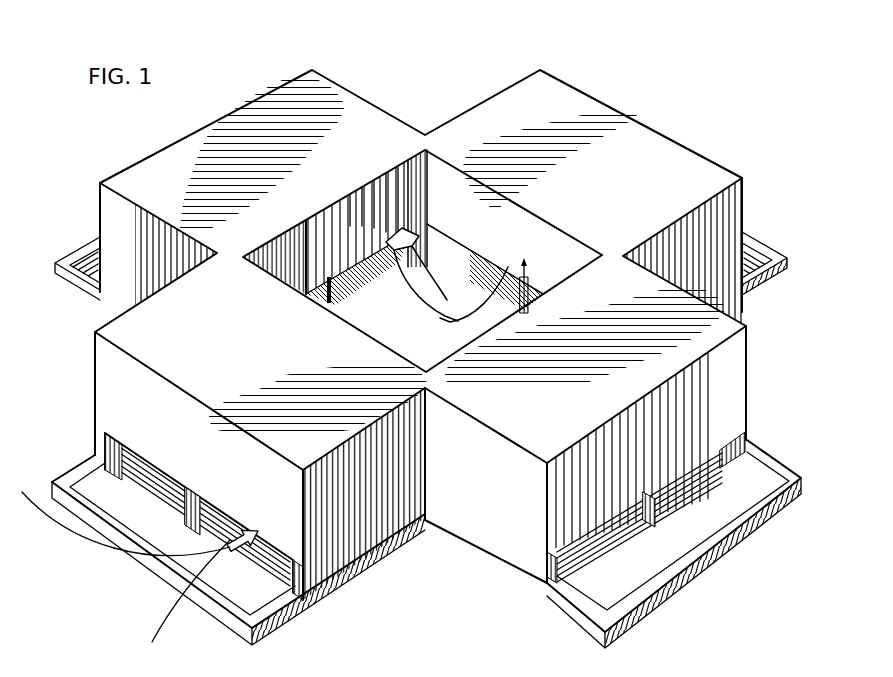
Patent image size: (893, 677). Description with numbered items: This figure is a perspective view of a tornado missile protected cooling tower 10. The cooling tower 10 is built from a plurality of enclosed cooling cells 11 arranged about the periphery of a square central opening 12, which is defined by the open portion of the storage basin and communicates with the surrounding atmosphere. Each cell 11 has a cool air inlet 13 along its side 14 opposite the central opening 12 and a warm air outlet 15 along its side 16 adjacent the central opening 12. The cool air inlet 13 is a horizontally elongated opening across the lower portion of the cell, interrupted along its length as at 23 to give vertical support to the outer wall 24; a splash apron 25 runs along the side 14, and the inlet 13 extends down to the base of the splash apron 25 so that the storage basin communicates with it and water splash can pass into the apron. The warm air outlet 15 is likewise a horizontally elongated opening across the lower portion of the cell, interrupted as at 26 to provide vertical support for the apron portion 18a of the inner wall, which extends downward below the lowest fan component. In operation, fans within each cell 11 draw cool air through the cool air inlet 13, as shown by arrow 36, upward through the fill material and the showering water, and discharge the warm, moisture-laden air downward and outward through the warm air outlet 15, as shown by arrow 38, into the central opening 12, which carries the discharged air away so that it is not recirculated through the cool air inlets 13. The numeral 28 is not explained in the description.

The tornado missile protected cooling tower 10 is at (419, 334).
The enclosed cooling cell 11 is at (360, 93).
The central opening 12 is at (385, 333).
The cool air inlet 13 is at (745, 446).
The side opposite the central opening 14 is at (120, 422).
The warm air outlet 15 is at (343, 317).
The side adjacent the central opening 16 is at (420, 172).
The apron portion 18a is at (300, 247).
The interruption of cool air inlet 23 is at (190, 509).
The outer wall 24 is at (289, 503).
The splash apron 25 is at (90, 492).
The interruption of warm air outlet 26 is at (330, 275).
The wall portion 28 is at (387, 205).
The arrow 36 is at (216, 563).
The arrow 38 is at (456, 320).